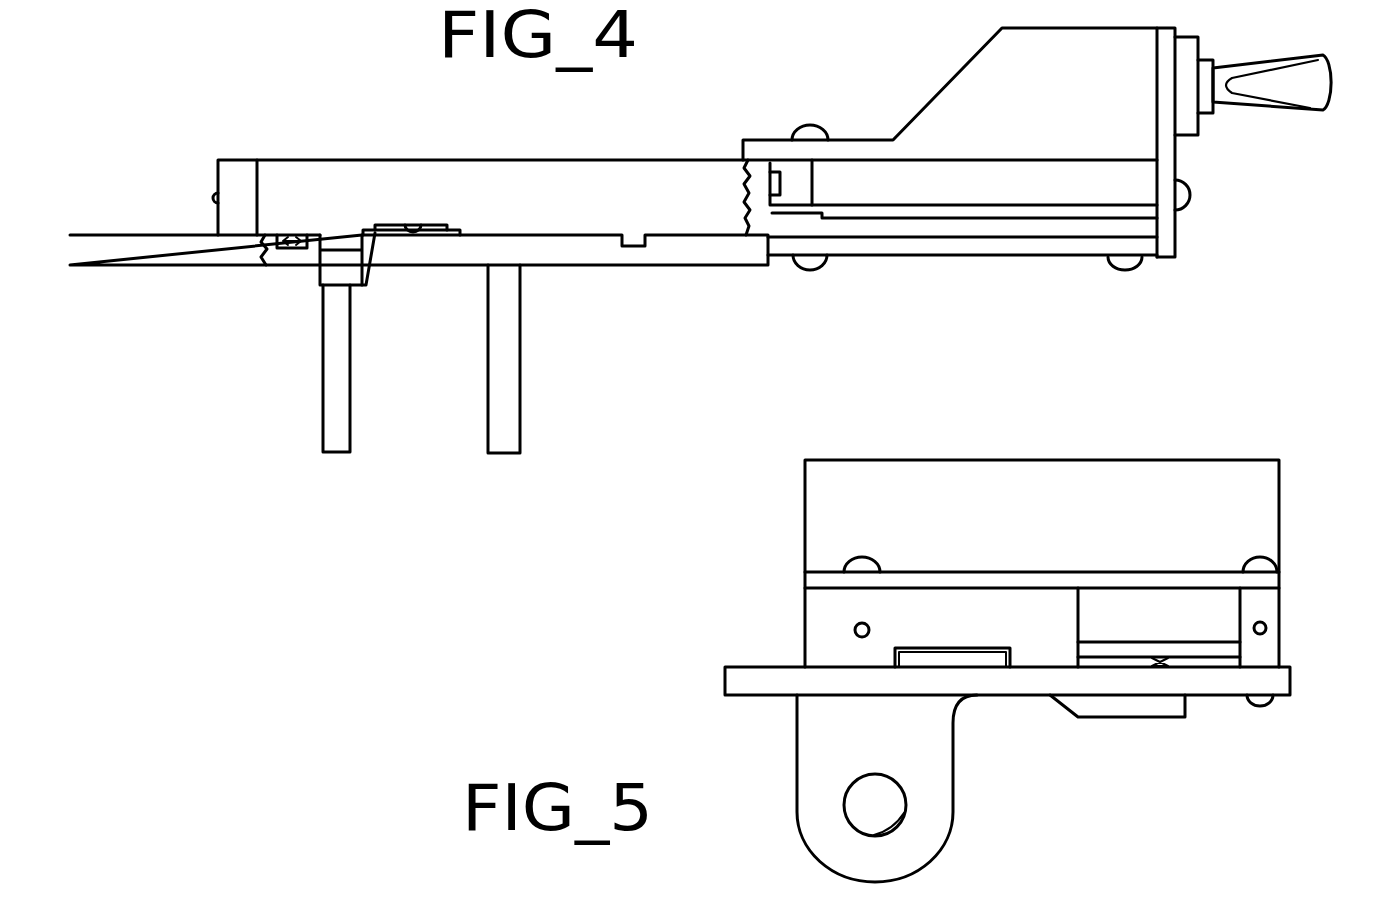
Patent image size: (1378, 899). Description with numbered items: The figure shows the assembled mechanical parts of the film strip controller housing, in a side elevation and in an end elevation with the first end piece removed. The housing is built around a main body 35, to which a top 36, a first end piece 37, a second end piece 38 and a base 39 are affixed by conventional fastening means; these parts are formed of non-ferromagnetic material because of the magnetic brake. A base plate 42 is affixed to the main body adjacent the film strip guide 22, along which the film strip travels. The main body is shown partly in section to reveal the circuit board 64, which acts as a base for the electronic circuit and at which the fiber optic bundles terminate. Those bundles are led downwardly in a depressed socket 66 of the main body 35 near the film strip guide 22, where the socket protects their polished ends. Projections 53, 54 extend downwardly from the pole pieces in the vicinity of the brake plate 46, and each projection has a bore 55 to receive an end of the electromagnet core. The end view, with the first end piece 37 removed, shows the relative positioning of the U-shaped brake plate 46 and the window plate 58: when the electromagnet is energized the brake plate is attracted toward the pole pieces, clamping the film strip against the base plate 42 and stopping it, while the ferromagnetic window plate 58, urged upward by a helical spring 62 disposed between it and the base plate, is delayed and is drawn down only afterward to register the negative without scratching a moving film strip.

In FIG. 4, the film strip guide 22 is at (422, 233).
In FIG. 4, the main body 35 is at (580, 160).
In FIG. 5, the main body 35 is at (803, 622).
In FIG. 4, the top 36 is at (950, 82).
In FIG. 4, the first end piece 37 is at (233, 160).
In FIG. 4, the second end piece 38 is at (1168, 257).
In FIG. 4, the base 39 is at (912, 258).
In FIG. 4, the base plate 42 is at (700, 265).
In FIG. 5, the base plate 42 is at (750, 697).
In FIG. 5, the brake plate 46 is at (987, 658).
In FIG. 4, the projection 53 is at (505, 453).
In FIG. 4, the projection 54 is at (333, 452).
In FIG. 5, the projection 54 is at (797, 818).
In FIG. 5, the bore 55 is at (905, 812).
In FIG. 5, the window plate 58 is at (1220, 652).
In FIG. 4, the helical spring 62 is at (288, 248).
In FIG. 4, the circuit board 64 is at (1015, 210).
In FIG. 4, the depressed socket 66 is at (367, 286).
In FIG. 5, the depressed socket 66 is at (1118, 717).